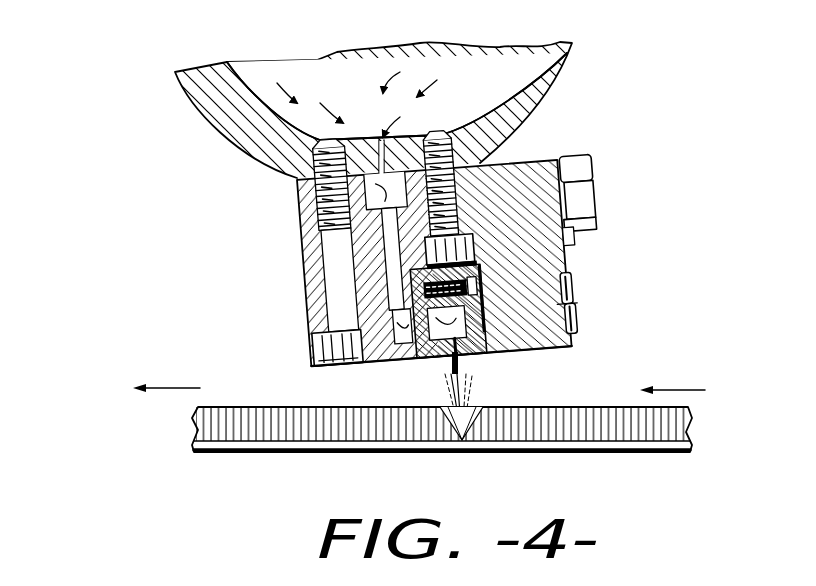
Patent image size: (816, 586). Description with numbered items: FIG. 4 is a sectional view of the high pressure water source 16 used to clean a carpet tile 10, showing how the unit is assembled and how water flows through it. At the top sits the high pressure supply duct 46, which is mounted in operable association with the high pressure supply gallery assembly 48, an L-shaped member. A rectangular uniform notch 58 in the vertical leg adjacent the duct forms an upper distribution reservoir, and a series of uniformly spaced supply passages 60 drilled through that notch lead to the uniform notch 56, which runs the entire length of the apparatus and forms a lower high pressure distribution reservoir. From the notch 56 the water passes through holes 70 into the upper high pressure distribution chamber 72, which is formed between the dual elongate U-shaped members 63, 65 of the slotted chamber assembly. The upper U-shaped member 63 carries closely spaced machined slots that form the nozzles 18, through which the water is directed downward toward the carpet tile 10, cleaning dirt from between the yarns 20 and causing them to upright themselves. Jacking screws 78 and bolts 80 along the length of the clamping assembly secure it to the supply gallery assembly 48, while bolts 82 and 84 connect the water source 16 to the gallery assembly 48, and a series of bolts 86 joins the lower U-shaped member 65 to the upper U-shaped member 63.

The carpet tile 10 is at (690, 430).
The high pressure water source 16 is at (632, 68).
The nozzles 18 is at (463, 358).
The yarns 20 is at (233, 405).
The high pressure supply duct 46 is at (243, 85).
The high pressure supply gallery assembly 48 is at (566, 256).
The uniform notch 56 is at (400, 327).
The rectangular uniform notch 58 is at (340, 226).
The supply passages 60 is at (380, 248).
The upper U-shaped member 63 is at (497, 342).
The lower U-shaped member 65 is at (427, 360).
The holes 70 is at (430, 352).
The upper high pressure distribution chamber 72 is at (575, 325).
The jacking screws 78 is at (575, 298).
The bolts 80 is at (600, 190).
The bolt 82 is at (455, 232).
The bolt 84 is at (315, 352).
The bolts 86 is at (563, 282).